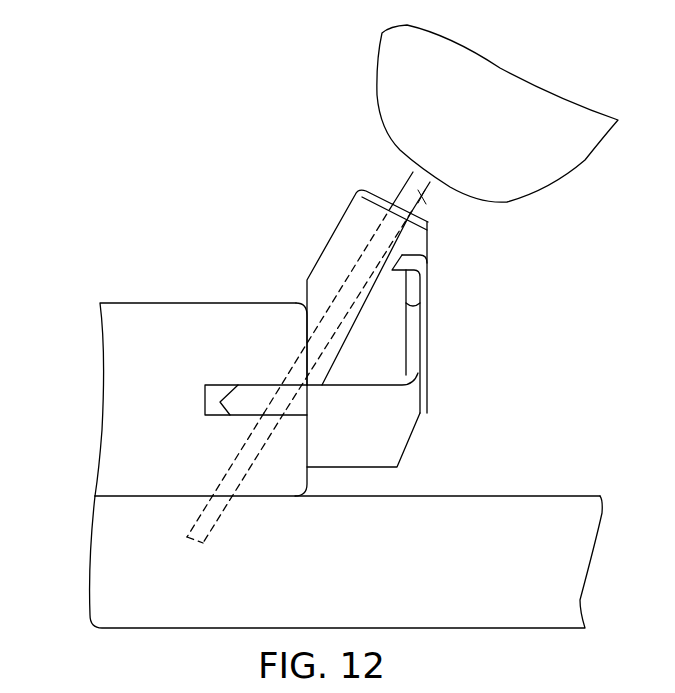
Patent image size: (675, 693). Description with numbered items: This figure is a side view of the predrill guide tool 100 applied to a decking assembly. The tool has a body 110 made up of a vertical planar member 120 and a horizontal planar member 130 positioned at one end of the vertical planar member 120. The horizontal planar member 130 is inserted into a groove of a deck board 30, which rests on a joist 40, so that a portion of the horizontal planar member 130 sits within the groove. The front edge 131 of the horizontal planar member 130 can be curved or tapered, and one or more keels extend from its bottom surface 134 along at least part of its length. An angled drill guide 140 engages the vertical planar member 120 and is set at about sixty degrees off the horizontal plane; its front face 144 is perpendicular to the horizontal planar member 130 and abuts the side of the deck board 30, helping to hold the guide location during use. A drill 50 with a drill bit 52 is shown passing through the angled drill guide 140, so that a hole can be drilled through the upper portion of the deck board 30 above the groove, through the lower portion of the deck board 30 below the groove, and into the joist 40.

The deck board 30 is at (120, 428).
The joist 40 is at (120, 573).
The drill 50 is at (568, 83).
The drill bit 52 is at (92, 496).
The predrill guide tool 100 is at (550, 377).
The body 110 is at (425, 282).
The vertical planar member 120 is at (415, 398).
The horizontal planar member 130 is at (263, 383).
The front edge 131 is at (220, 402).
The bottom surface 134 is at (270, 417).
The angled drill guide 140 is at (334, 252).
The front face 144 is at (300, 306).